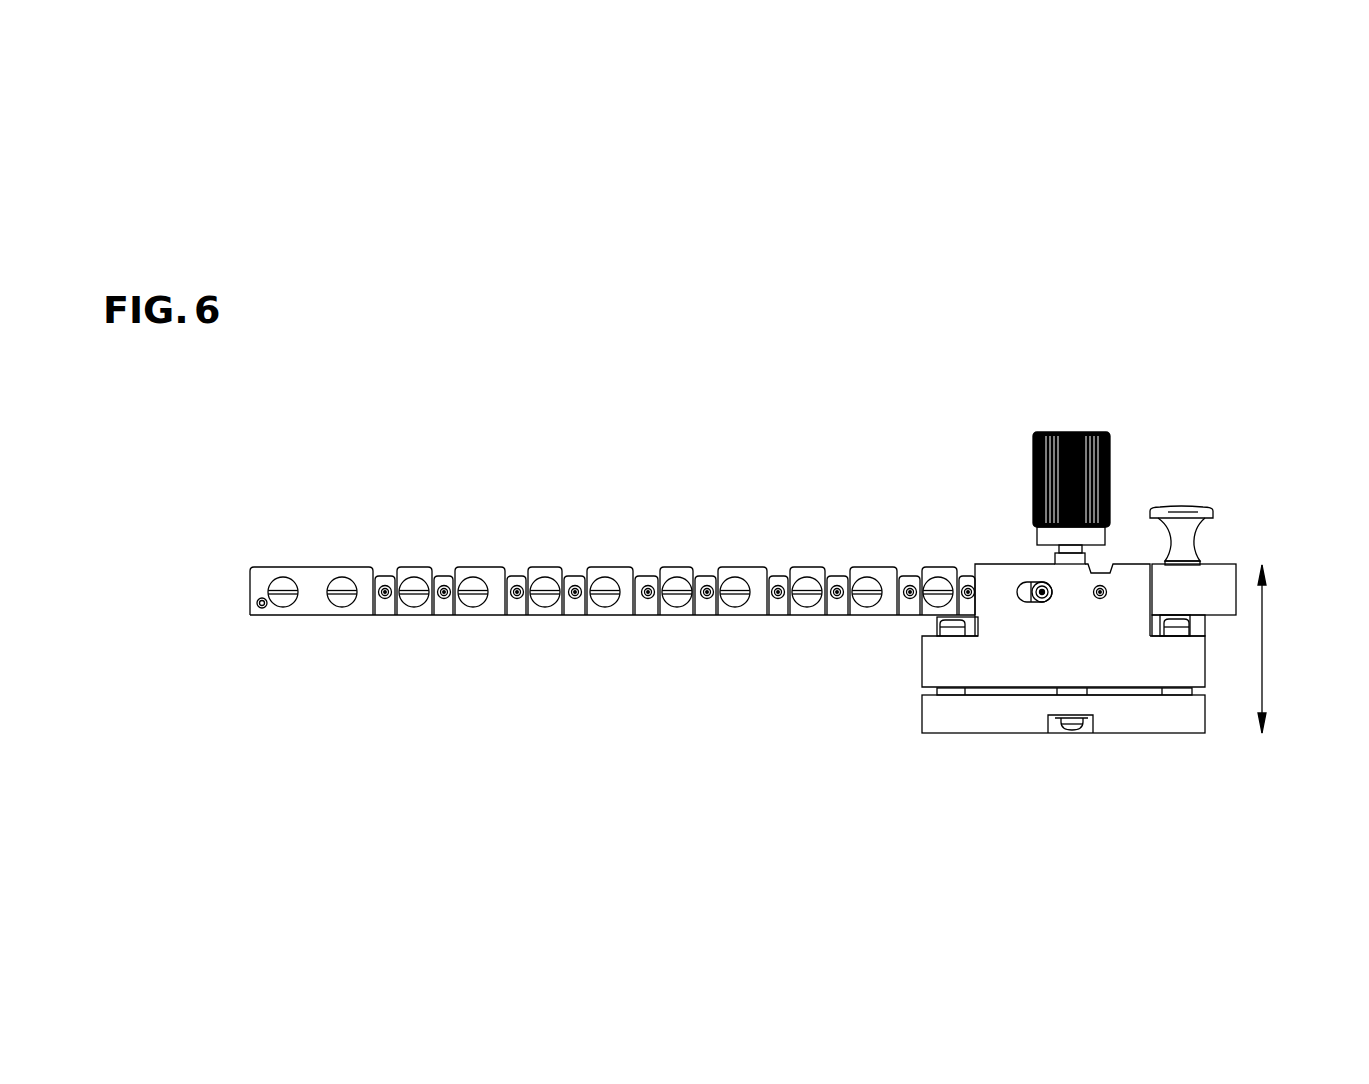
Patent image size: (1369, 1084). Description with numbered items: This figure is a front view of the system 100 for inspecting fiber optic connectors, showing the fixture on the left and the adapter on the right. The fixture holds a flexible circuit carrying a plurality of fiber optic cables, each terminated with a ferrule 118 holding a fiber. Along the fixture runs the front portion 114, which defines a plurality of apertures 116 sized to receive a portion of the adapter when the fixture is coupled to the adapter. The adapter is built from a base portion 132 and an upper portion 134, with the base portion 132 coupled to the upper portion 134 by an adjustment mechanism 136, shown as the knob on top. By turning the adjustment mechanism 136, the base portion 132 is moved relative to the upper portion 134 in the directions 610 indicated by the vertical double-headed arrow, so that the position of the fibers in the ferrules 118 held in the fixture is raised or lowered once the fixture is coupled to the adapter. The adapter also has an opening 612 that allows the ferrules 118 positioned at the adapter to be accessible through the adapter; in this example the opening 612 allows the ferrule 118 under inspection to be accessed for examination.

The system 100 is at (1172, 328).
The front portion 114 is at (491, 566).
The apertures 116 is at (606, 600).
The ferrule 118 is at (776, 598).
The base portion 132 is at (934, 711).
The upper portion 134 is at (935, 660).
The adjustment mechanism 136 is at (1108, 451).
The directions 610 is at (1262, 655).
The opening 612 is at (1030, 584).